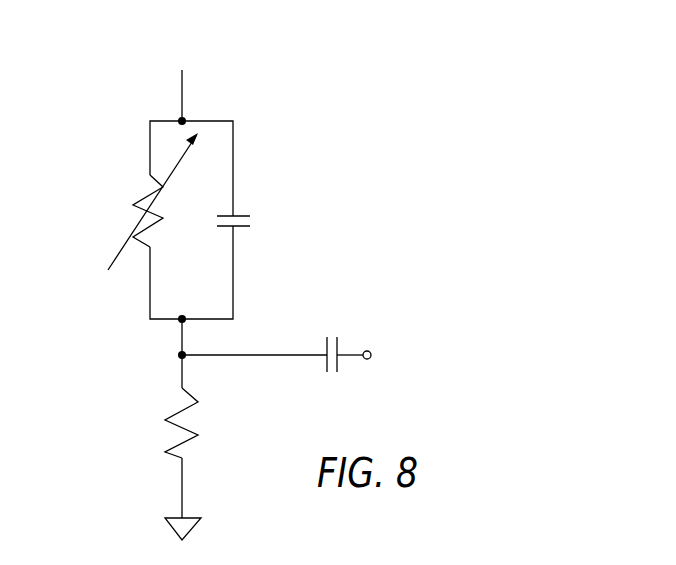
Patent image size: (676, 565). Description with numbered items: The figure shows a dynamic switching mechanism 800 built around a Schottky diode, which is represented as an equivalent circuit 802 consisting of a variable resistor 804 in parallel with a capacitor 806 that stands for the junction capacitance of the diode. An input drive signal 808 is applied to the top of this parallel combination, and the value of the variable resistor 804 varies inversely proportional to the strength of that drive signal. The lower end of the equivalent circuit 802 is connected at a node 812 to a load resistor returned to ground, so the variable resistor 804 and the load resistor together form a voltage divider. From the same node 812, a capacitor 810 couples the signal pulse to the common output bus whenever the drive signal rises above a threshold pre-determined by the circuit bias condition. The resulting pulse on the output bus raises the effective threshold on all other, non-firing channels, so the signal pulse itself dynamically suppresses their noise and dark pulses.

The dynamic switching mechanism 800 is at (346, 59).
The equivalent circuit 802 is at (266, 182).
The variable resistor 804 is at (104, 242).
The capacitor 806 is at (266, 237).
The input drive signal 808 is at (206, 59).
The capacitor 810 is at (343, 322).
The node 812 is at (182, 337).